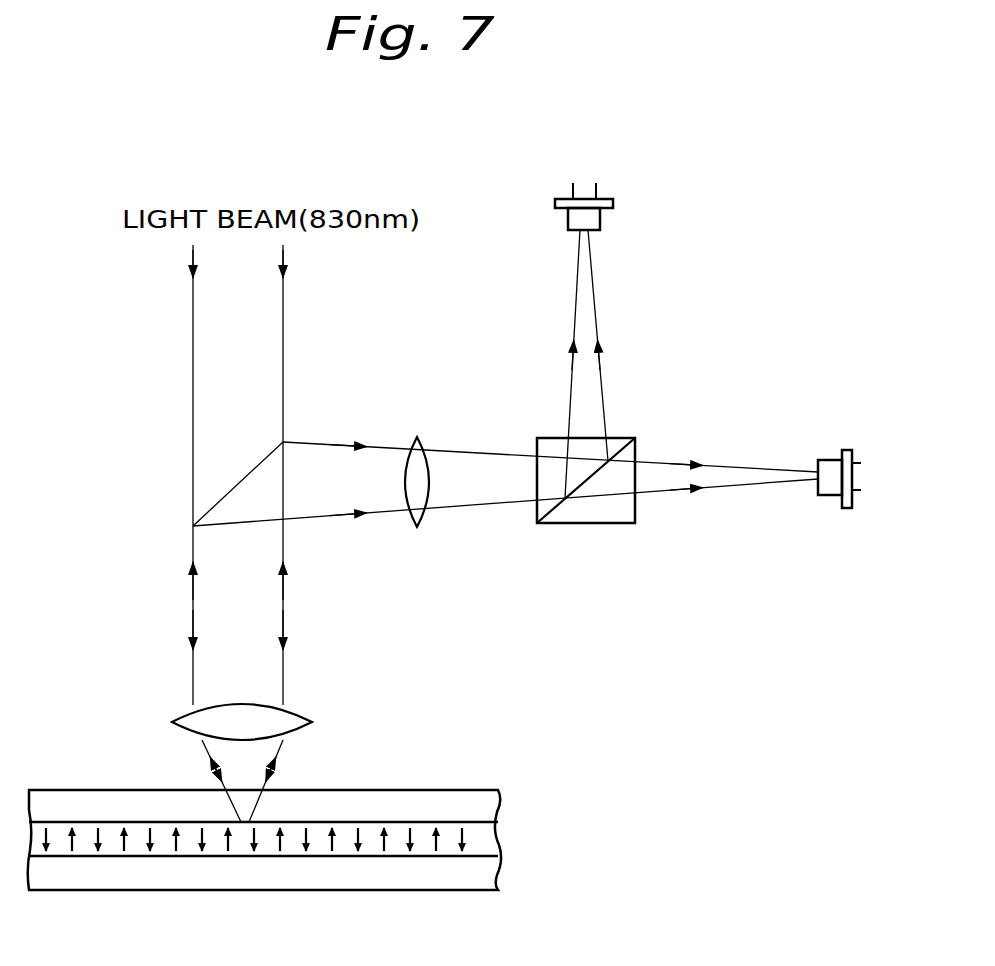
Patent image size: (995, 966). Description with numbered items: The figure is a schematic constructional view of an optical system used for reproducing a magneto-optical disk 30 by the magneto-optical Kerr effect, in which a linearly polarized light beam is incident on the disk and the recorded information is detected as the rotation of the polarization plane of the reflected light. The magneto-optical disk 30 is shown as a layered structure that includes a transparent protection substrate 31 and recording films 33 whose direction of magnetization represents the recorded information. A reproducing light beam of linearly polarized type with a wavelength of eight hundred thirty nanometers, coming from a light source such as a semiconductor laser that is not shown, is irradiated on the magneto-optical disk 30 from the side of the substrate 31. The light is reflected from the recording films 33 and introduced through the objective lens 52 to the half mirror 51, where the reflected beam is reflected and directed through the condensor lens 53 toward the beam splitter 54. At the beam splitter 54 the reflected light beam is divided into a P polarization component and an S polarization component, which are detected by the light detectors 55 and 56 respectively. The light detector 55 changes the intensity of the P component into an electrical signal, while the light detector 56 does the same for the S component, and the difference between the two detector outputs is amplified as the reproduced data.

The magneto-optical disk 30 is at (296, 872).
The transparent protection substrate 31 is at (482, 808).
The recording films 33 is at (482, 840).
The half mirror 51 is at (265, 440).
The objective lens 52 is at (293, 713).
The condensor lens 53 is at (418, 437).
The beam splitter 54 is at (592, 523).
The light detector 55 is at (601, 221).
The light detector 56 is at (828, 460).